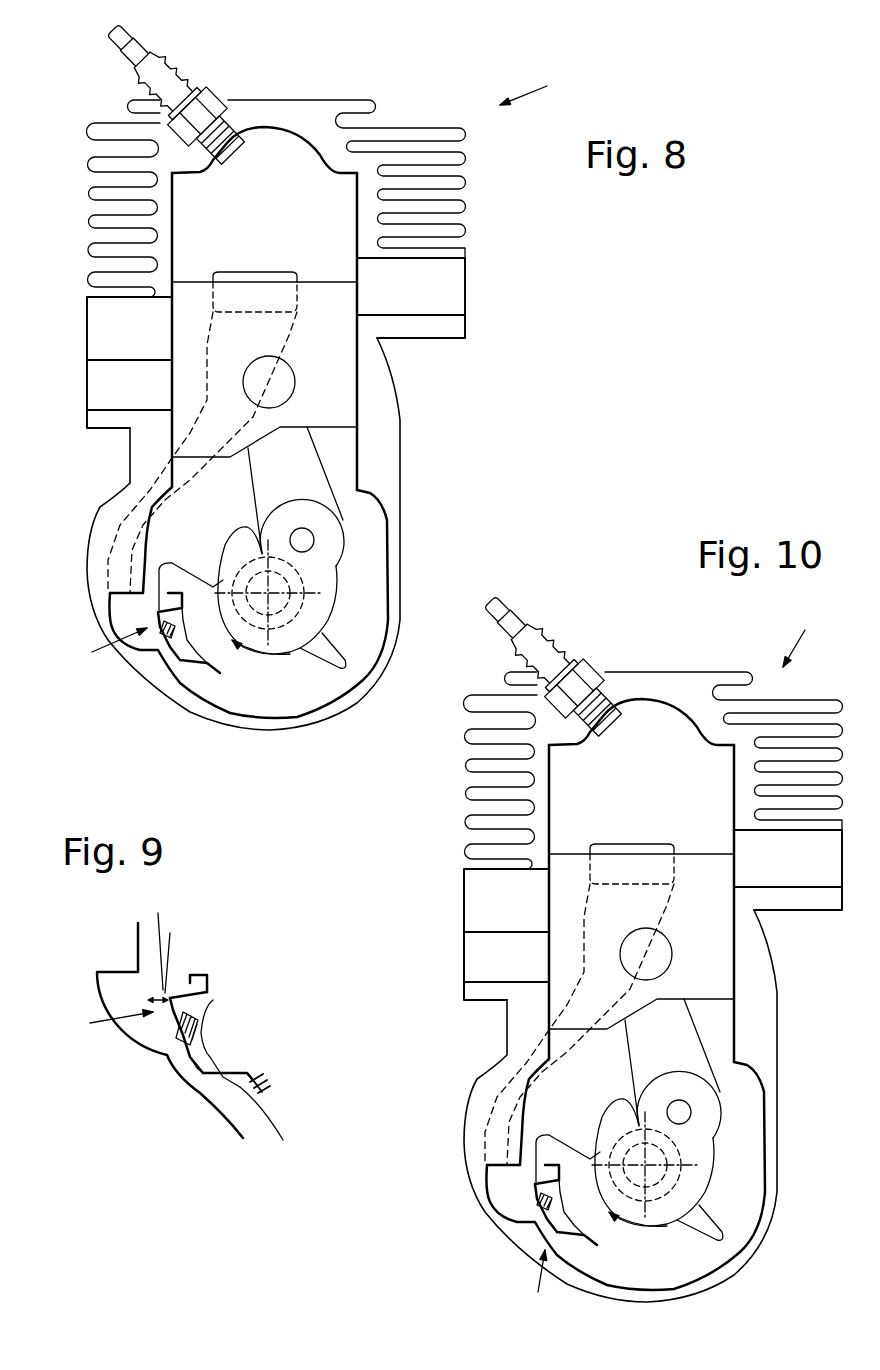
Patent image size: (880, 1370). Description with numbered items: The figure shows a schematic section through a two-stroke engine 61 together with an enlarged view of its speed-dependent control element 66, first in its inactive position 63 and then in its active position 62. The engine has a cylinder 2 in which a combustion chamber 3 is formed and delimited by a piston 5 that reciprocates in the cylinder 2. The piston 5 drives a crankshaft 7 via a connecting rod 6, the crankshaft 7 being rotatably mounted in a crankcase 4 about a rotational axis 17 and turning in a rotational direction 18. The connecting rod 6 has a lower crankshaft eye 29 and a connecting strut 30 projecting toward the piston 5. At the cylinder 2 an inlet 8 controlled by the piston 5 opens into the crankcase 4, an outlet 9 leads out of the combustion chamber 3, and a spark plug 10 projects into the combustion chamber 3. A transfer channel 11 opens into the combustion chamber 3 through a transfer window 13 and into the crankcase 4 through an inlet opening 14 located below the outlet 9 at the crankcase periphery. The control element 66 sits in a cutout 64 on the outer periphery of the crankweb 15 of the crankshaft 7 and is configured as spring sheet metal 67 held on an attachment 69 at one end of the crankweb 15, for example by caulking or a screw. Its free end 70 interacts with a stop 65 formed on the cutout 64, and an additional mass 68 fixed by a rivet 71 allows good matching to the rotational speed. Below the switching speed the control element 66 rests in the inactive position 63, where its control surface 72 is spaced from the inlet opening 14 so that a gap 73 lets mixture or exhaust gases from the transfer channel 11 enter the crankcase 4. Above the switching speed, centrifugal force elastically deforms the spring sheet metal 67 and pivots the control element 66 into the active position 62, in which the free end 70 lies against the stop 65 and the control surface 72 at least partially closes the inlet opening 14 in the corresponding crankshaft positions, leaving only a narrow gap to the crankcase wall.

In FIG. 8, the cylinder 2 is at (160, 218).
In FIG. 10, the cylinder 2 is at (537, 792).
In FIG. 8, the combustion chamber 3 is at (301, 217).
In FIG. 10, the combustion chamber 3 is at (679, 790).
In FIG. 8, the crankcase 4 is at (198, 703).
In FIG. 10, the crankcase 4 is at (772, 1175).
In FIG. 8, the piston 5 is at (335, 378).
In FIG. 10, the piston 5 is at (712, 950).
In FIG. 8, the connecting rod 6 is at (310, 470).
In FIG. 10, the connecting rod 6 is at (690, 1043).
In FIG. 8, the crankshaft 7 is at (273, 607).
In FIG. 10, the crankshaft 7 is at (653, 1175).
In FIG. 8, the inlet 8 is at (167, 388).
In FIG. 10, the inlet 8 is at (546, 956).
In FIG. 8, the outlet 9 is at (367, 290).
In FIG. 10, the outlet 9 is at (745, 862).
In FIG. 8, the spark plug 10 is at (230, 140).
In FIG. 10, the spark plug 10 is at (608, 708).
In FIG. 8, the transfer channel 11 is at (222, 345).
In FIG. 10, the transfer channel 11 is at (597, 917).
In FIG. 8, the transfer window 13 is at (253, 270).
In FIG. 10, the transfer window 13 is at (628, 845).
In FIG. 8, the inlet opening 14 is at (143, 603).
In FIG. 9, the inlet opening 14 is at (157, 1032).
In FIG. 10, the inlet opening 14 is at (520, 1177).
In FIG. 8, the crankweb 15 is at (257, 687).
In FIG. 9, the crankweb 15 is at (282, 1128).
In FIG. 10, the crankweb 15 is at (652, 1257).
In FIG. 8, the rotational axis 17 is at (266, 591).
In FIG. 10, the rotational axis 17 is at (643, 1161).
In FIG. 8, the rotational direction 18 is at (295, 635).
In FIG. 10, the rotational direction 18 is at (670, 1208).
In FIG. 8, the lower crankshaft eye 29 is at (325, 542).
In FIG. 10, the lower crankshaft eye 29 is at (703, 1113).
In FIG. 8, the connecting strut 30 is at (316, 486).
In FIG. 10, the connecting strut 30 is at (695, 1058).
In FIG. 8, the two-stroke engine 61 is at (536, 86).
In FIG. 10, the two-stroke engine 61 is at (801, 637).
In FIG. 10, the active position 62 is at (533, 1283).
In FIG. 8, the inactive position 63 is at (106, 648).
In FIG. 9, the cutout 64 is at (213, 1057).
In FIG. 9, the stop 65 is at (193, 977).
In FIG. 10, the stop 65 is at (540, 1168).
In FIG. 8, the control element 66 is at (170, 651).
In FIG. 9, the control element 66 is at (187, 1060).
In FIG. 10, the control element 66 is at (540, 1217).
In FIG. 9, the spring sheet metal 67 is at (207, 1077).
In FIG. 9, the additional mass 68 is at (195, 1017).
In FIG. 9, the attachment 69 is at (270, 1080).
In FIG. 9, the free end 70 is at (210, 977).
In FIG. 10, the free end 70 is at (547, 1168).
In FIG. 9, the rivet 71 is at (180, 1030).
In FIG. 9, the control surface 72 is at (190, 1077).
In FIG. 10, the control surface 72 is at (532, 1195).
In FIG. 9, the gap 73 is at (111, 1022).